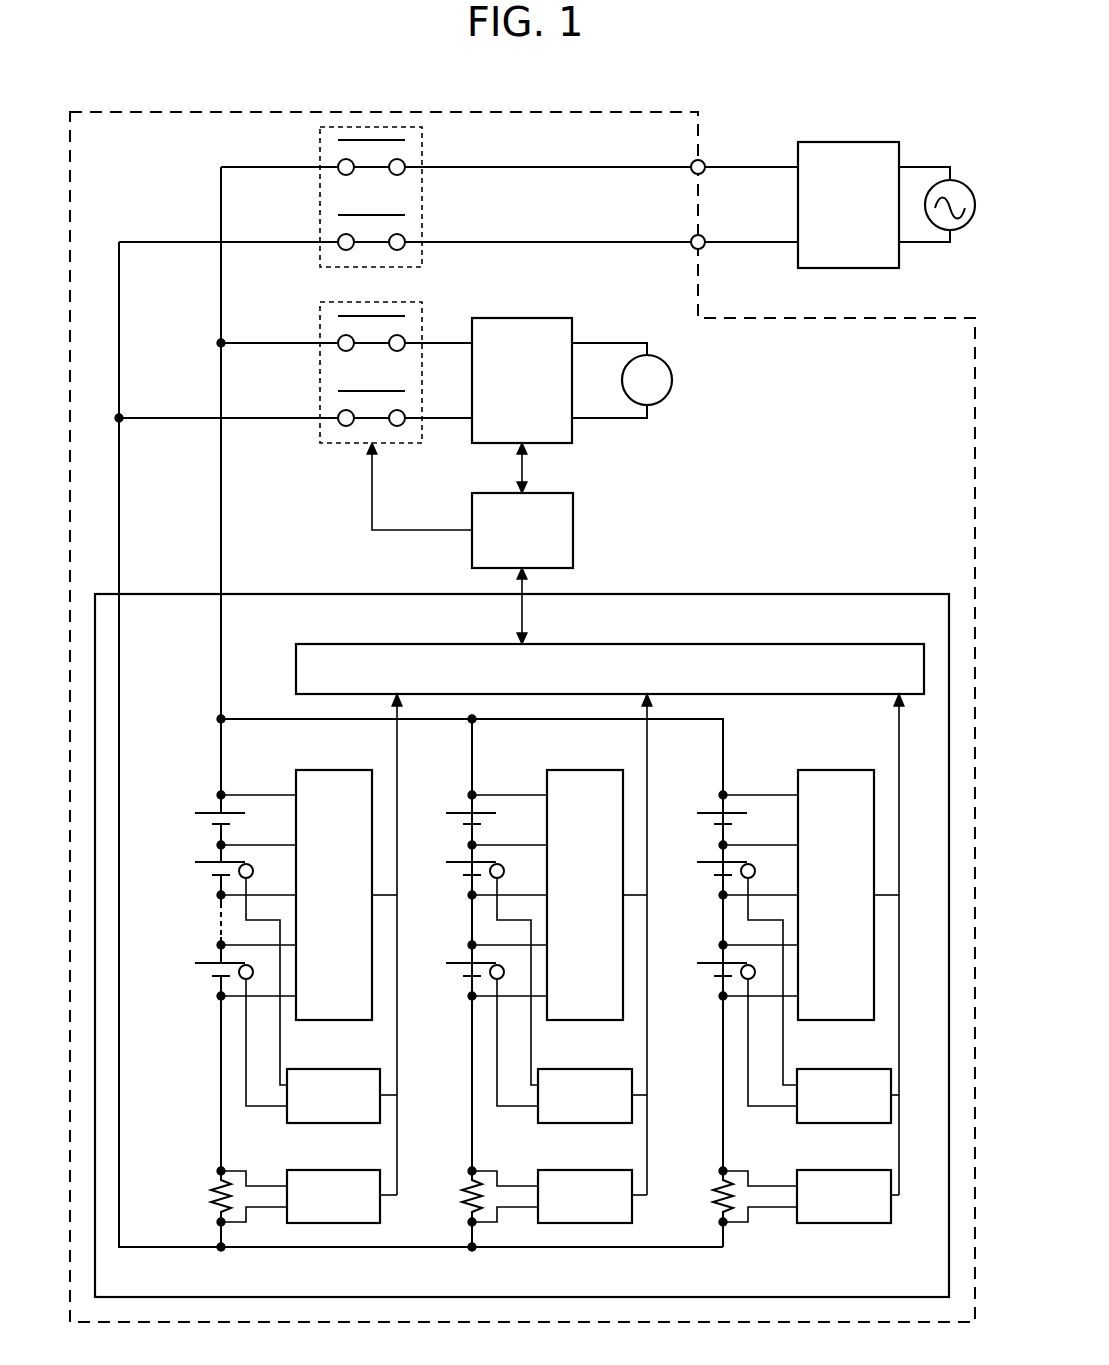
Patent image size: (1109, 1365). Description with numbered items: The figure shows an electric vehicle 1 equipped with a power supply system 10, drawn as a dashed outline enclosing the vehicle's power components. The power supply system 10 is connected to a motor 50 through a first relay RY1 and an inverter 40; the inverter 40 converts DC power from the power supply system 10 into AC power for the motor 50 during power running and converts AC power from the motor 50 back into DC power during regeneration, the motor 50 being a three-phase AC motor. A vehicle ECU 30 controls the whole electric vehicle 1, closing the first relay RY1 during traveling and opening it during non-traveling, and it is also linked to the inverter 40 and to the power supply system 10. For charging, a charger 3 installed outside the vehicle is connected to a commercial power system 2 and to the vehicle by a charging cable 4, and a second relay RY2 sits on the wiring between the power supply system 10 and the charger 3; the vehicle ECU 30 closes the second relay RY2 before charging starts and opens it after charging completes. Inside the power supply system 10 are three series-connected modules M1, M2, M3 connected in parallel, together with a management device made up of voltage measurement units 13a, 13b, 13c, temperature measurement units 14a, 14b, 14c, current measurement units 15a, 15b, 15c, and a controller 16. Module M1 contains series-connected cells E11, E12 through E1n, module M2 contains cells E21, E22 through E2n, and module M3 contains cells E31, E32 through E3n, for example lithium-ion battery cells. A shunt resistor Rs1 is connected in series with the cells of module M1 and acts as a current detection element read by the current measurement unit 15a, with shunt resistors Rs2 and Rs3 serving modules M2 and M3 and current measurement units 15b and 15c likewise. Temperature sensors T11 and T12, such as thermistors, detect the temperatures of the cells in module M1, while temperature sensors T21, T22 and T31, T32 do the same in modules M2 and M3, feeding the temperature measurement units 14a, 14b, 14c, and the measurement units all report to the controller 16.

The electric vehicle 1 is at (950, 318).
The commercial power system 2 is at (962, 179).
The charger 3 is at (862, 142).
The charging cable 4 is at (748, 243).
The power supply system 10 is at (918, 594).
The controller 16 is at (892, 644).
The vehicle ECU 30 is at (540, 493).
The inverter 40 is at (540, 318).
The motor 50 is at (672, 378).
The first relay RY1 is at (422, 308).
The second relay RY2 is at (422, 167).
The series-connected module M1 is at (232, 776).
The series-connected module M2 is at (483, 776).
The series-connected module M3 is at (734, 776).
The voltage measurement unit 13a is at (333, 770).
The voltage measurement unit 13b is at (584, 770).
The voltage measurement unit 13c is at (836, 770).
The temperature measurement unit 14a is at (333, 1069).
The temperature measurement unit 14b is at (584, 1069).
The temperature measurement unit 14c is at (836, 1069).
The current measurement unit 15a is at (333, 1170).
The current measurement unit 15b is at (584, 1170).
The current measurement unit 15c is at (836, 1170).
The cell E11 is at (204, 812).
The cell E12 is at (204, 862).
The cell E1n is at (204, 963).
The cell E21 is at (455, 812).
The cell E22 is at (455, 862).
The cell E2n is at (455, 963).
The cell E31 is at (706, 812).
The cell E32 is at (706, 862).
The cell E3n is at (706, 963).
The temperature sensor T11 is at (263, 965).
The temperature sensor T12 is at (263, 1027).
The temperature sensor T21 is at (514, 965).
The temperature sensor T22 is at (514, 1027).
The temperature sensor T31 is at (769, 965).
The temperature sensor T32 is at (769, 1027).
The shunt resistor Rs1 is at (232, 1196).
The shunt resistor Rs2 is at (483, 1196).
The shunt resistor Rs3 is at (738, 1196).